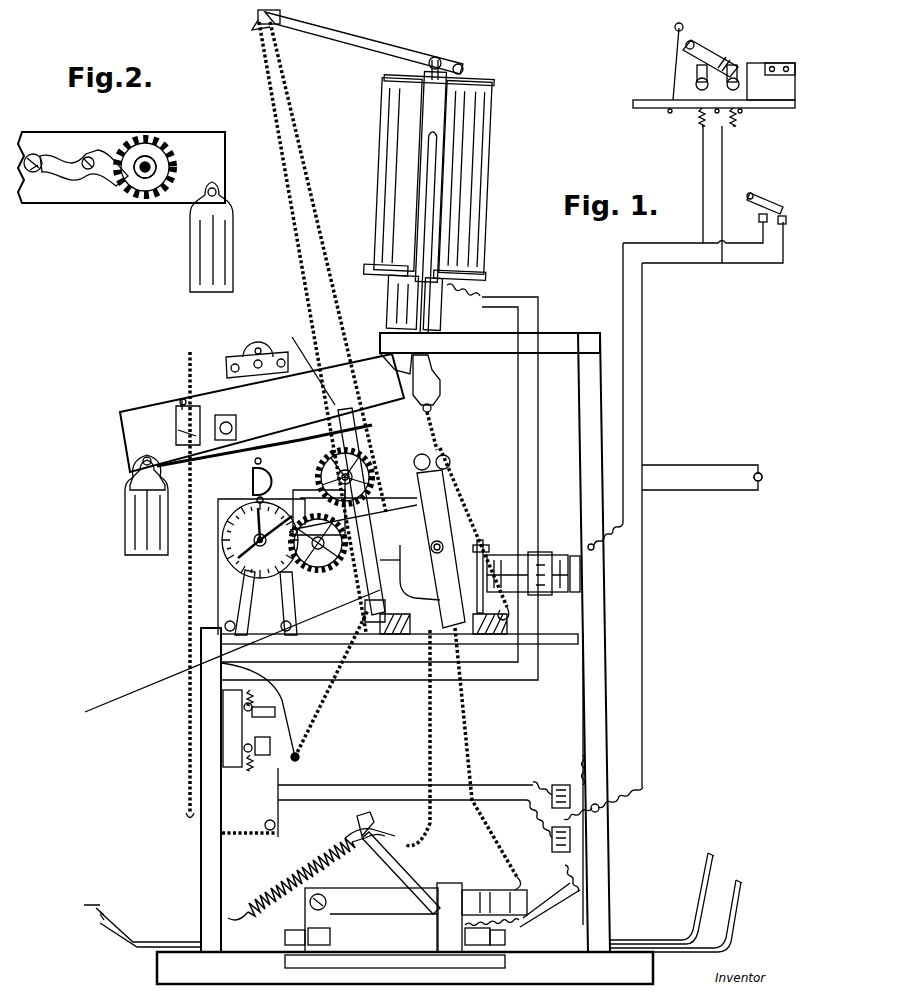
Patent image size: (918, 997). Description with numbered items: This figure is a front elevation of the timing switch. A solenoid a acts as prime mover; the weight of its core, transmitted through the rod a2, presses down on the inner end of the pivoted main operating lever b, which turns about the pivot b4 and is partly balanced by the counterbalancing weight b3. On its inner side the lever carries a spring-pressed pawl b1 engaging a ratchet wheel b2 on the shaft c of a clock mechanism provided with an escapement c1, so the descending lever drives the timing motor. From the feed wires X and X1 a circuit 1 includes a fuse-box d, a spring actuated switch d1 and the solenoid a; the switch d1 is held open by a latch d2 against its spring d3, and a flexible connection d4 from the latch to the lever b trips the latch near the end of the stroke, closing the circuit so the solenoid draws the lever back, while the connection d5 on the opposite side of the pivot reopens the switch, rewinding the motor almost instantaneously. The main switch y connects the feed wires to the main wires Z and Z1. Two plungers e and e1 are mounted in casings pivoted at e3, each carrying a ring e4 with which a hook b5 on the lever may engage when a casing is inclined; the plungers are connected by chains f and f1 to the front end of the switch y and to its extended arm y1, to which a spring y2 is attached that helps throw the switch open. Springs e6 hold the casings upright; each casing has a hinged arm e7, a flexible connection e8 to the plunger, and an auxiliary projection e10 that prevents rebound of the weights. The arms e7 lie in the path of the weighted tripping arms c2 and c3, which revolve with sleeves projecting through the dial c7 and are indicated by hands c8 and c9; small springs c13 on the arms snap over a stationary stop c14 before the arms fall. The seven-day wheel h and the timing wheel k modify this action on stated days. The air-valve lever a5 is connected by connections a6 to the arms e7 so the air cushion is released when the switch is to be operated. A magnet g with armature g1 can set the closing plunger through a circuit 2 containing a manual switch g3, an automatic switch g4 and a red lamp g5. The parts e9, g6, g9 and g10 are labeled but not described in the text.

In FIG. 1, the solenoid a is at (470, 132).
In FIG. 1, the rod a2 is at (392, 342).
In FIG. 1, the air valve lever a5 is at (398, 28).
In FIG. 1, the connections a6 is at (298, 143).
In FIG. 2, the main operating lever b is at (62, 188).
In FIG. 1, the main operating lever b is at (262, 413).
In FIG. 2, the spring-pressed pawl b1 is at (100, 178).
In FIG. 2, the ratchet wheel b2 is at (155, 152).
In FIG. 2, the counterbalancing weight b3 is at (205, 255).
In FIG. 1, the counterbalancing weight b3 is at (137, 513).
In FIG. 1, the pivotal point b4 is at (222, 417).
In FIG. 1, the projecting hooks b5 is at (440, 396).
In FIG. 2, the shaft c is at (143, 182).
In FIG. 1, the escapement c1 is at (258, 348).
In FIG. 1, the tripping arm c2 is at (319, 570).
In FIG. 1, the tripping arm c3 is at (133, 475).
In FIG. 1, the dial c7 is at (300, 556).
In FIG. 1, the indicating hand c8 is at (285, 500).
In FIG. 1, the indicating hand c9 is at (230, 560).
In FIG. 1, the spring c13 is at (190, 455).
In FIG. 1, the stationary stop c14 is at (257, 458).
In FIG. 1, the fuse-box d is at (550, 835).
In FIG. 1, the spring actuated switch d1 is at (275, 726).
In FIG. 1, the latch d2 is at (282, 776).
In FIG. 1, the spring d3 is at (272, 745).
In FIG. 1, the flexible connection d4 is at (245, 707).
In FIG. 1, the connection d5 is at (318, 740).
In FIG. 1, the plunger e is at (422, 549).
In FIG. 1, the plunger e1 is at (445, 492).
In FIG. 1, the pivot e3 is at (443, 545).
In FIG. 1, the ring e4 is at (415, 458).
In FIG. 1, the springs e6 is at (475, 637).
In FIG. 1, the extending arm e7 is at (228, 628).
In FIG. 1, the flexible connection e8 is at (413, 530).
In FIG. 1, the stop e9 is at (380, 653).
In FIG. 1, the auxiliary projection e10 is at (250, 492).
In FIG. 1, the chain f is at (460, 735).
In FIG. 1, the chain f1 is at (436, 733).
In FIG. 1, the magnet g is at (520, 565).
In FIG. 1, the armature g1 is at (480, 555).
In FIG. 1, the switch g3 is at (770, 205).
In FIG. 1, the automatic switch g4 is at (650, 105).
In FIG. 1, the auxiliary lamp g5 is at (762, 480).
In FIG. 1, the switch lever g6 is at (702, 53).
In FIG. 1, the springs g9 is at (684, 113).
In FIG. 1, the rod g10 is at (672, 65).
In FIG. 1, the seven-day wheel h is at (219, 660).
In FIG. 1, the timing wheel k is at (301, 356).
In FIG. 1, the main switch y is at (388, 903).
In FIG. 1, the extended arm y1 is at (392, 870).
In FIG. 1, the spring y2 is at (280, 878).
In FIG. 1, the feed wire X is at (708, 863).
In FIG. 1, the feed wire X1 is at (738, 886).
In FIG. 1, the main wire Z is at (108, 905).
In FIG. 1, the main wire Z1 is at (84, 905).
In FIG. 1, the circuit 1 is at (403, 612).
In FIG. 1, the circuit 2 is at (673, 473).